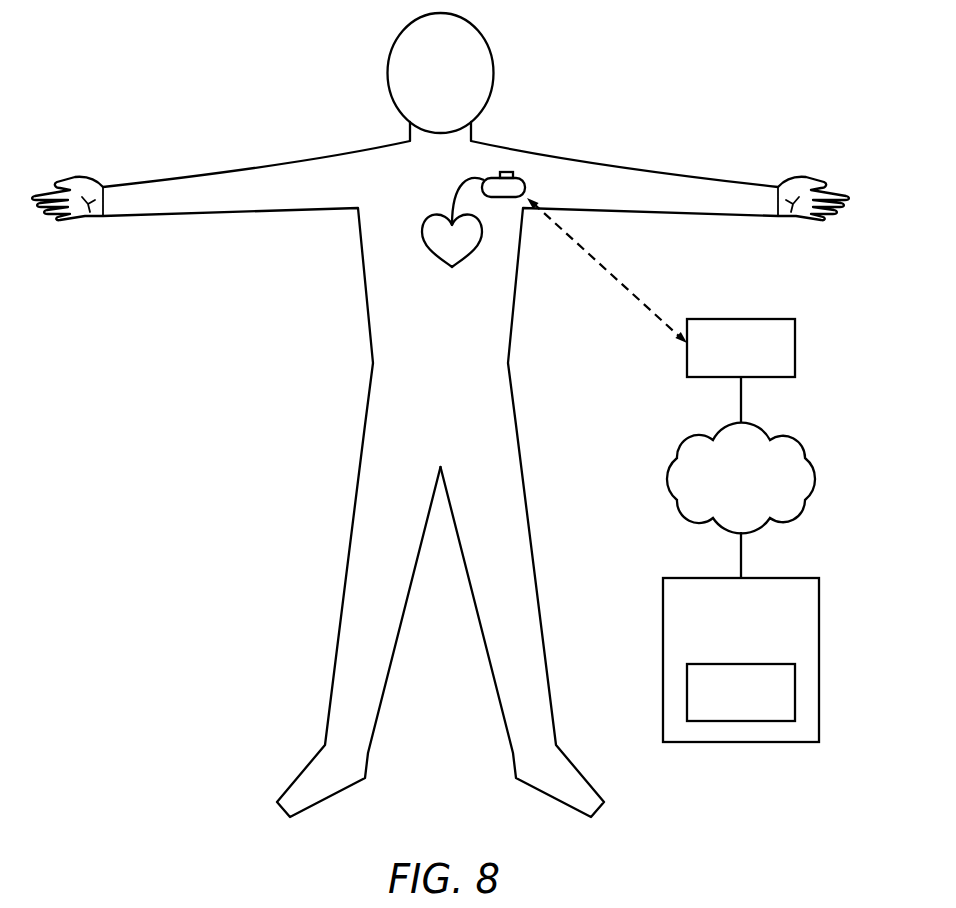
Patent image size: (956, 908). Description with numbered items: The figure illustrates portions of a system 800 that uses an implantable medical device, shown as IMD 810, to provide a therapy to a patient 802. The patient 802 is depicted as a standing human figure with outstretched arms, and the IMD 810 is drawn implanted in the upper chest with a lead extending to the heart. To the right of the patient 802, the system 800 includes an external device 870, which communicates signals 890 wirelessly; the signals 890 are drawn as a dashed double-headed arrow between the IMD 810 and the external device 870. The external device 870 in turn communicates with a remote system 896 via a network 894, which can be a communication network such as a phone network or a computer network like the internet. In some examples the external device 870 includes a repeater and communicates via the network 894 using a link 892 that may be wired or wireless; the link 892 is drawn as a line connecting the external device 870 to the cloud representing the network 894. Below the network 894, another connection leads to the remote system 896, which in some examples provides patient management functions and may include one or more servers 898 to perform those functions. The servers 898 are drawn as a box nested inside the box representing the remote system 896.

The system 800 is at (750, 28).
The patient 802 is at (365, 289).
The IMD 810 is at (505, 172).
The external device 870 is at (741, 319).
The signals 890 is at (600, 268).
The link 892 is at (743, 399).
The network 894 is at (814, 477).
The remote system 896 is at (765, 577).
The servers 898 is at (740, 664).